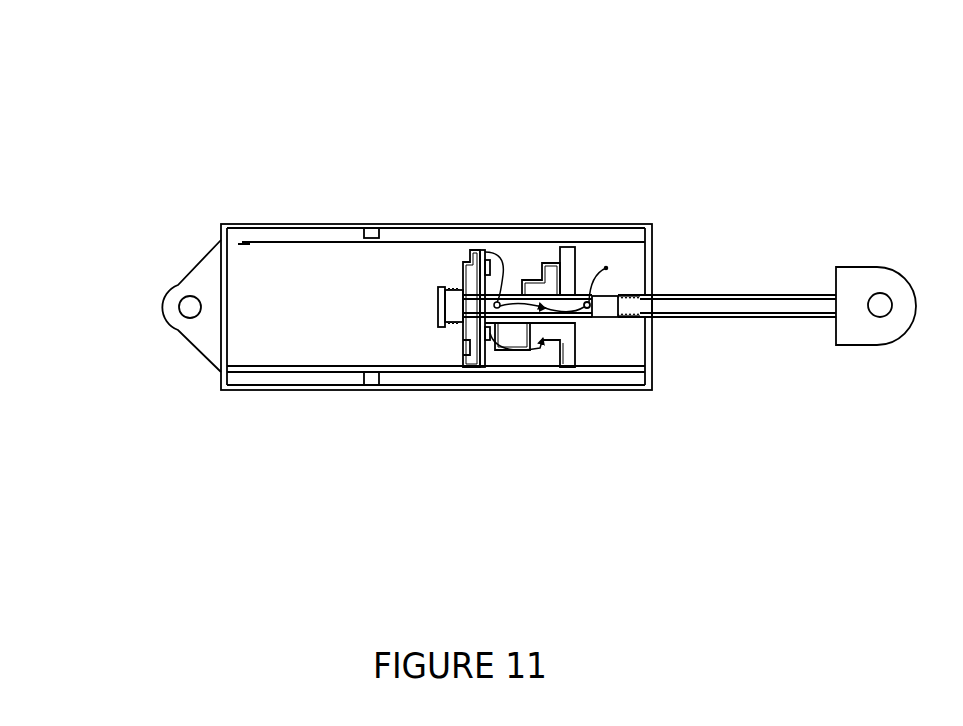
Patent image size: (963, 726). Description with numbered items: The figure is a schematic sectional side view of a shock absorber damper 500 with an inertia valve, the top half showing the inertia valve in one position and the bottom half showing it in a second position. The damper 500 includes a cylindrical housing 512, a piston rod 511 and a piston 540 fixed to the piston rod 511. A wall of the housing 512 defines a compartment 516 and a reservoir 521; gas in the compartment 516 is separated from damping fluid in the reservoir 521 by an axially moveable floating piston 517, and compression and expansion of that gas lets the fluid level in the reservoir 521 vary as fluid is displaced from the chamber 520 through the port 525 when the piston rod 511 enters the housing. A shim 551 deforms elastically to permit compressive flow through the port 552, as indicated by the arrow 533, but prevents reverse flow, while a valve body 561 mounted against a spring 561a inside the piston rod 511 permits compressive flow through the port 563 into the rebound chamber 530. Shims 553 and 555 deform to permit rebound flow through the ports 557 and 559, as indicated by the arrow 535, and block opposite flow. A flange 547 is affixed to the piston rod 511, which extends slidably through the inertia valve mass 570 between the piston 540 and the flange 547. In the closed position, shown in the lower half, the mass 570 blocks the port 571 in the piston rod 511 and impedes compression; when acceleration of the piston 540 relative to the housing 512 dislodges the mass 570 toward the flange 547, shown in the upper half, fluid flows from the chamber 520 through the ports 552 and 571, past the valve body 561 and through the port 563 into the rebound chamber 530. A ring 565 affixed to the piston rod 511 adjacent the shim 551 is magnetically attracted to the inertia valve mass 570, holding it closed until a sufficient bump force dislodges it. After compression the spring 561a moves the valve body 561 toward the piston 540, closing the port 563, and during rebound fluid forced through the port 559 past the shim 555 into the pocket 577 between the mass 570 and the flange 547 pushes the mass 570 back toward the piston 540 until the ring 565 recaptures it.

The shock absorber damper 500 is at (142, 105).
The piston rod 511 is at (688, 296).
The cylindrical housing 512 is at (258, 225).
The compartment 516 is at (388, 227).
The floating piston 517 is at (372, 227).
The chamber 520 is at (311, 295).
The reservoir 521 is at (309, 227).
The port 525 is at (232, 230).
The rebound chamber 530 is at (628, 338).
The arrow 533 is at (458, 256).
The arrow 535 is at (580, 337).
The piston 540 is at (467, 335).
The flange 547 is at (566, 257).
The shim 551 is at (482, 252).
The port 552 is at (474, 250).
The shim 553 is at (457, 362).
The shim 555 is at (542, 343).
The port 557 is at (477, 365).
The port 559 is at (563, 340).
The valve body 561 is at (620, 298).
The spring 561a is at (645, 320).
The port 563 is at (608, 268).
The ring 565 is at (488, 272).
The inertia valve mass 570 is at (532, 270).
The port 571 is at (497, 303).
The pocket 577 is at (530, 340).